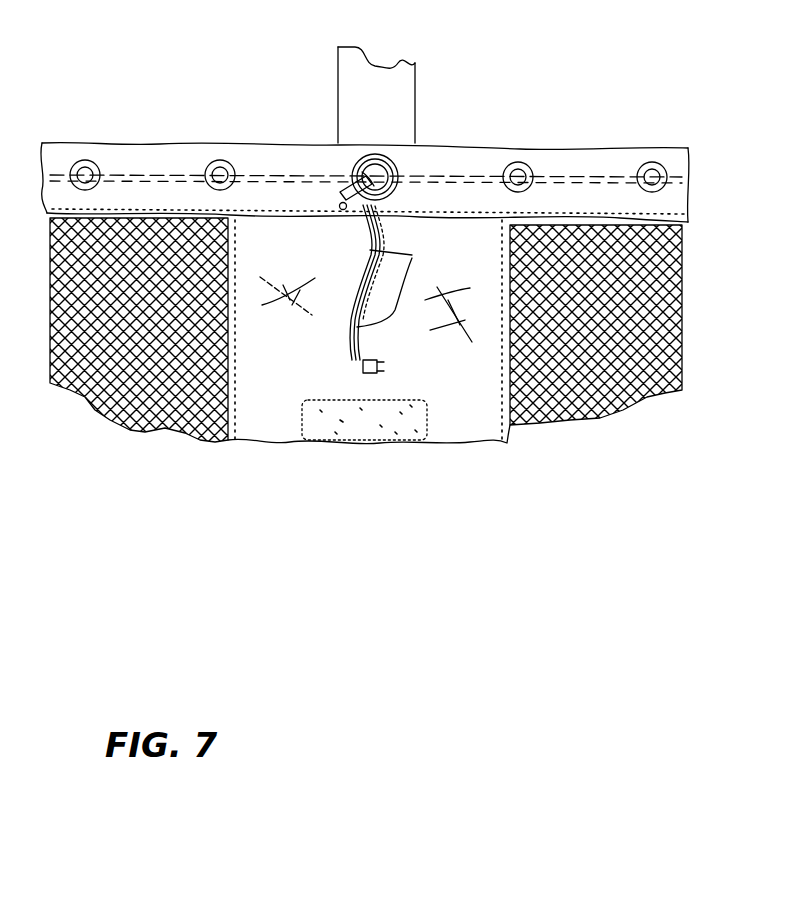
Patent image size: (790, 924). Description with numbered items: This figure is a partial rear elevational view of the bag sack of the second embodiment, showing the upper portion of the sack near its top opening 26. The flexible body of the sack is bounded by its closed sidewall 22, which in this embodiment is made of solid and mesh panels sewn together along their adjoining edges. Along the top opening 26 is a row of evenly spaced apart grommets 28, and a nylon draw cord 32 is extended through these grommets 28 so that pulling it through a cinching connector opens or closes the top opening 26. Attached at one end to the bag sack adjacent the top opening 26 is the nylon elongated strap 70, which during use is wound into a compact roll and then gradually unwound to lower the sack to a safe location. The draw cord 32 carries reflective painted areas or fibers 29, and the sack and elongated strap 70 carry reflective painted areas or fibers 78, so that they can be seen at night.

The sidewall 22 is at (345, 355).
The top opening 26 is at (125, 420).
The grommets 28 is at (210, 160).
The reflective painted areas or fibers 29 is at (412, 255).
The draw cord 32 is at (447, 172).
The elongated strap 70 is at (338, 68).
The reflective painted areas or fibers 78 is at (370, 427).